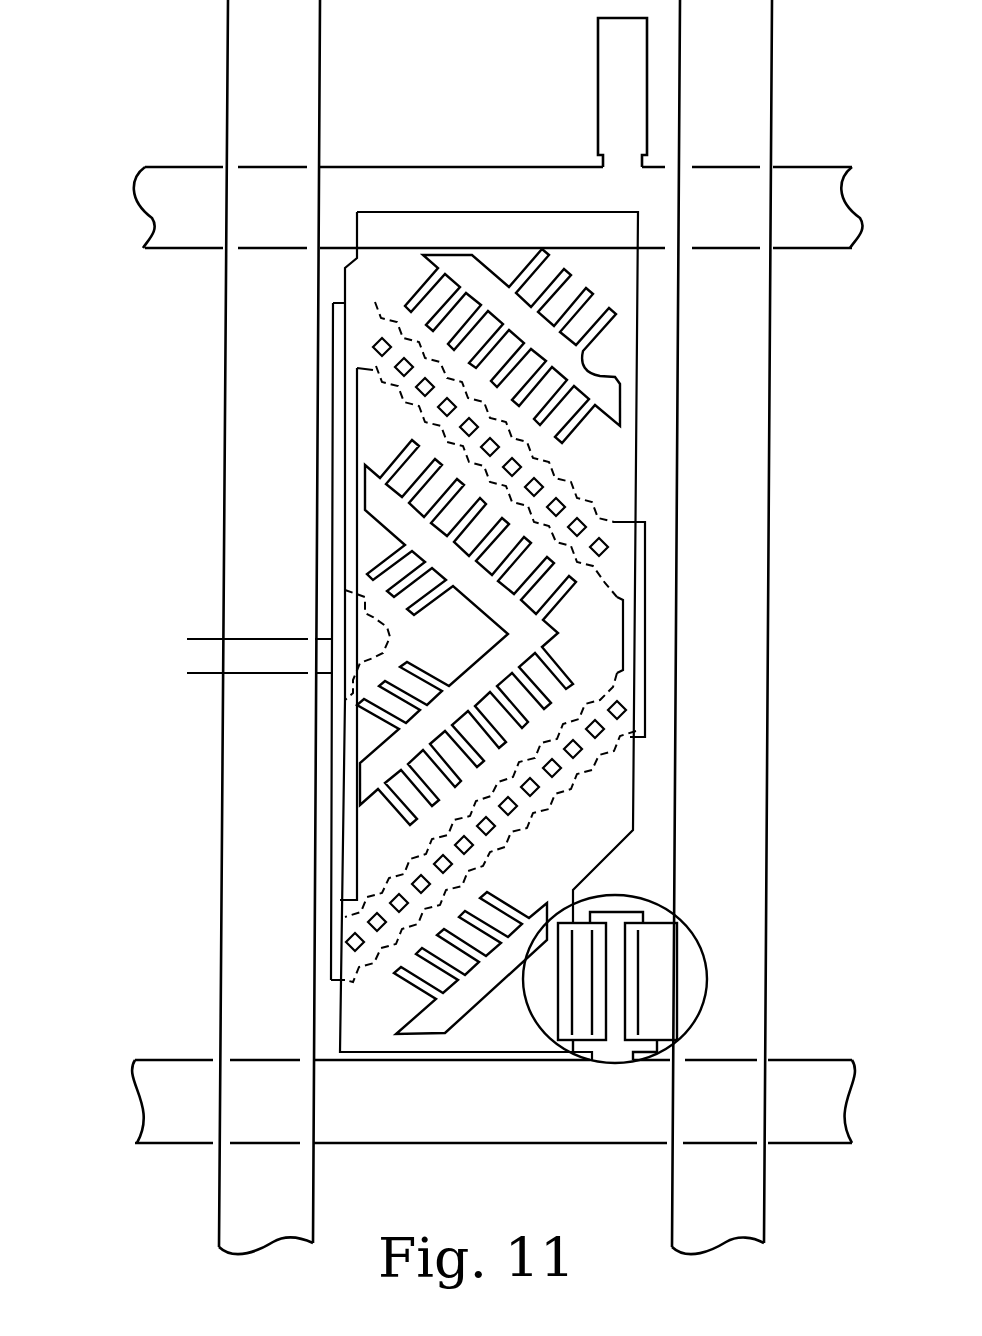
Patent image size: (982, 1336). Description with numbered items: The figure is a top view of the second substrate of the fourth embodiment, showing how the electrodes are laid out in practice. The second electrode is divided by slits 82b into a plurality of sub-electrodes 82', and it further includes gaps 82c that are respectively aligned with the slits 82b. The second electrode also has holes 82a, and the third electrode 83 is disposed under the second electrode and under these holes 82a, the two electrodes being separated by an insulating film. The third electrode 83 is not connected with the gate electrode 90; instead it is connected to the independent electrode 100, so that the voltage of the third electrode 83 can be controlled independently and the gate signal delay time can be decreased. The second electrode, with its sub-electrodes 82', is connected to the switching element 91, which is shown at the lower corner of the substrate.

The gate electrode 90 is at (613, 98).
The sub-electrodes 82' is at (379, 628).
The hole 82a is at (375, 347).
The slit 82b is at (380, 502).
The gap 82c is at (628, 373).
The third electrode 83 is at (375, 636).
The independent electrode 100 is at (198, 656).
The switching element 91 is at (708, 965).